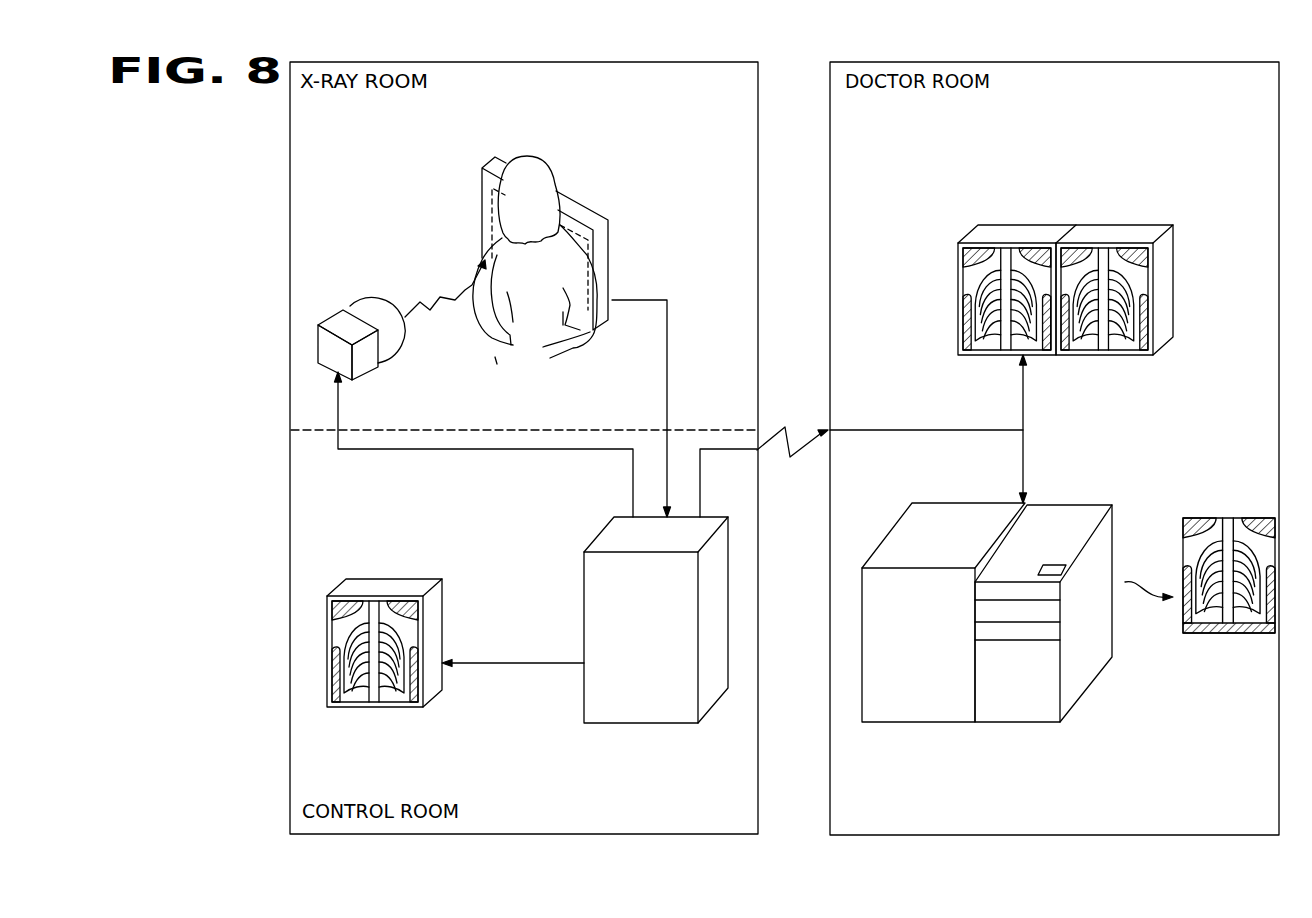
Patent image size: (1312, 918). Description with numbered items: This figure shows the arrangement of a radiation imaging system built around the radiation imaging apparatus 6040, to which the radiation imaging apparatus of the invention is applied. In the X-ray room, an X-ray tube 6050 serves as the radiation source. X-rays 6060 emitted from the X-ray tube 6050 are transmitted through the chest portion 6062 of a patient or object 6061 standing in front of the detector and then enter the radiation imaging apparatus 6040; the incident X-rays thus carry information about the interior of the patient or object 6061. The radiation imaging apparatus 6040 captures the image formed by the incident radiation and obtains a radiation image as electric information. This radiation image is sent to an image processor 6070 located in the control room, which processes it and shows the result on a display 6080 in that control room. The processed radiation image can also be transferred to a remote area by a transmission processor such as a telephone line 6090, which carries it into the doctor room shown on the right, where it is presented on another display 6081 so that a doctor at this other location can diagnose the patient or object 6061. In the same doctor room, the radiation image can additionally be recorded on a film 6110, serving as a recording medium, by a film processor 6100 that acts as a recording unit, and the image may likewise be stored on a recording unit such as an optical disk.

The radiation imaging apparatus 6040 is at (577, 226).
The X-ray tube 6050 is at (327, 318).
The X-rays 6060 is at (428, 300).
The patient or object 6061 is at (536, 160).
The chest portion 6062 is at (535, 317).
The image processor 6070 is at (584, 692).
The display 6080 is at (443, 612).
The display 6081 is at (990, 225).
The telephone line 6090 is at (790, 440).
The film processor 6100 is at (953, 503).
The film 6110 is at (1229, 517).